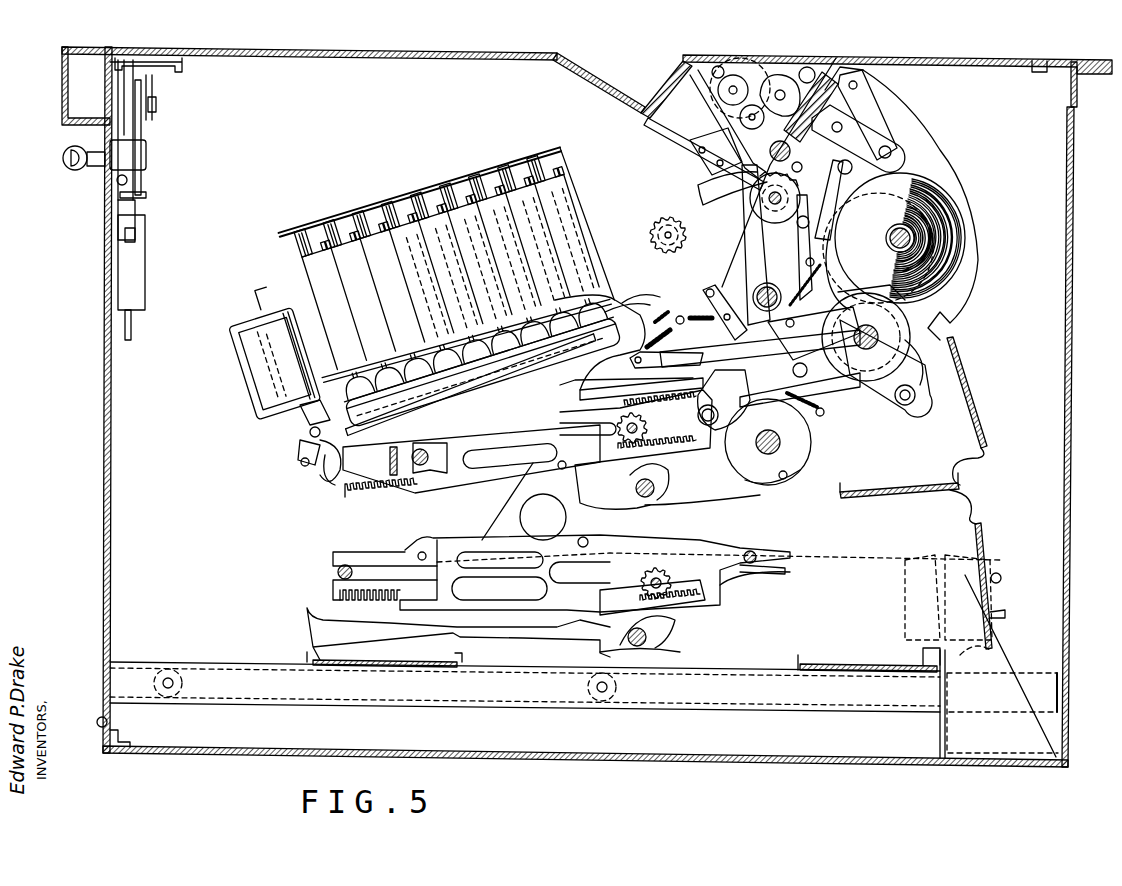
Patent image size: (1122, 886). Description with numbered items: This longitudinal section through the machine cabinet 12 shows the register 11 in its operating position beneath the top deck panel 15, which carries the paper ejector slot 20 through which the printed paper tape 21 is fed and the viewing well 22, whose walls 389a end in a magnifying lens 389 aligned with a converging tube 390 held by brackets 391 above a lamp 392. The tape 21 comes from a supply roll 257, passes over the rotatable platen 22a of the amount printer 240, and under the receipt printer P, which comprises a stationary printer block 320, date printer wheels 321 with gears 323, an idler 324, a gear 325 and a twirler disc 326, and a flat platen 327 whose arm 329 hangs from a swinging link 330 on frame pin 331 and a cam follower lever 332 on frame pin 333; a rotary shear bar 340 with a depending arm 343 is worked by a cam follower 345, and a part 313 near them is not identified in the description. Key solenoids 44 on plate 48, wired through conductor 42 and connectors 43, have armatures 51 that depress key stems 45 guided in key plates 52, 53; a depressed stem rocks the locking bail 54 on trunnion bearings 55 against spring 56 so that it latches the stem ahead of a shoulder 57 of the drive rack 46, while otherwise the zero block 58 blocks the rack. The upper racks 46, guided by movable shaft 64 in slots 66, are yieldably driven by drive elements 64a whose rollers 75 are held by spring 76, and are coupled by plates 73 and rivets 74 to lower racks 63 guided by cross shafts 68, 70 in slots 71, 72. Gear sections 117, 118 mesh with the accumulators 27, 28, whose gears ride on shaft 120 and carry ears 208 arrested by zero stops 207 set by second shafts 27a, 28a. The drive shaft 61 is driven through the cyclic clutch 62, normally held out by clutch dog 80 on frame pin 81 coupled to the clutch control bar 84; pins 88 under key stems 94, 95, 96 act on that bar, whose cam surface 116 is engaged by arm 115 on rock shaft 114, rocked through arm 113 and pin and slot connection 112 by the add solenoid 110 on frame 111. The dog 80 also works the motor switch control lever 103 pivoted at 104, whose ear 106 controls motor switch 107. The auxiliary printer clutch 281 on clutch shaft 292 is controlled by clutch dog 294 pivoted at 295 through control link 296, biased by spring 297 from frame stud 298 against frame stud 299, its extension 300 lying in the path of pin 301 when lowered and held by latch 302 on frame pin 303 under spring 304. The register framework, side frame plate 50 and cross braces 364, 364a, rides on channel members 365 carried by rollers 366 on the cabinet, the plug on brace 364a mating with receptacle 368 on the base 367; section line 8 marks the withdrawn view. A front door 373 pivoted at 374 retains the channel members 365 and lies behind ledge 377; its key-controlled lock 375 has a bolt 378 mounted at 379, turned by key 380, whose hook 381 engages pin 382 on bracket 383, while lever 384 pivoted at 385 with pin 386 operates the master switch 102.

The section line 8- 8 is at (888, 538).
The keyboard unit 11 is at (388, 180).
The section line 12- 12 is at (214, 37).
The housing top wall 15 is at (452, 50).
The platen 20 is at (815, 58).
The platen support 21 is at (837, 58).
The printing mechanism 22 is at (630, 49).
The ratchet wheel 22a is at (770, 220).
The rack plate 27 is at (636, 452).
The rack plate extension 27a is at (648, 505).
The lower rack plate 28 is at (600, 612).
The lower rack plate extension 28a is at (648, 655).
The bracket 42 is at (1010, 612).
The bracket post 43 is at (944, 540).
The key cover plate 44 is at (555, 196).
The key guide bar 45 is at (612, 307).
The slotted bar 46 is at (482, 490).
The key guide bar 48 is at (604, 292).
The base plate 50 is at (668, 268).
The key stem 51 is at (545, 172).
The link 52 is at (638, 320).
The spring 53 is at (622, 348).
The spring 54 is at (620, 330).
The link 55 is at (665, 313).
The key head 56 is at (476, 362).
The guide plate 57 is at (425, 386).
The guide plate 58 is at (392, 394).
The shaft 61 is at (800, 440).
The disc 62 is at (808, 450).
The slide plate 63 is at (716, 557).
The pivot screw 64 is at (422, 468).
The pivot block 64a is at (432, 480).
The rack 66 is at (346, 491).
The pivot screw 68 is at (338, 572).
The link 70 is at (748, 575).
The slide bar 71 is at (382, 558).
The pivot 72 is at (770, 560).
The link 73 is at (490, 512).
The pivot pin 74 is at (580, 538).
The slot 75 is at (463, 465).
The block 76 is at (388, 465).
The pivot 80 is at (716, 386).
The cam disc 81 is at (765, 430).
The lever 84 is at (325, 483).
The plate 88 is at (600, 380).
The key lever 94 is at (568, 350).
The key lever 95 is at (522, 335).
The key lever 96 is at (458, 360).
The bracket 102 is at (136, 258).
The pin 103 is at (824, 413).
The spring 104 is at (810, 380).
The plate 106 is at (805, 332).
The plate 107 is at (850, 290).
The frame 110 is at (255, 352).
The bracket 111 is at (300, 290).
The pin 112 is at (300, 458).
The latch 113 is at (300, 448).
The pin 114 is at (310, 432).
The lever 115 is at (300, 418).
The pawl 116 is at (305, 470).
The rack 117 is at (650, 398).
The rack 118 is at (700, 452).
The slot 120 is at (612, 430).
The pivot screw 207 is at (668, 478).
The pinion 208 is at (645, 420).
The gear 240 is at (657, 238).
The spring drum 257 is at (937, 197).
The cam wheel 281 is at (895, 312).
The frame plate 292 is at (905, 345).
The lever 294 is at (886, 395).
The pivot 295 is at (912, 398).
The bar 296 is at (690, 380).
The rack 297 is at (660, 360).
The spring 298 is at (668, 320).
The bar 299 is at (720, 338).
The lever 300 is at (755, 385).
The pin 301 is at (795, 470).
The pivot 302 is at (740, 290).
The lever 303 is at (722, 285).
The link 304 is at (702, 300).
The spring 313 is at (798, 262).
The cam 320 is at (802, 63).
The gear 321 is at (750, 60).
The gear 323 is at (752, 68).
The chute 324 is at (718, 118).
The gear 325 is at (716, 62).
The gear 326 is at (712, 56).
The ratchet 327 is at (852, 95).
The arm 329 is at (880, 142).
The arm 330 is at (865, 103).
The plate 331 is at (855, 88).
The plate 332 is at (905, 177).
The arm 333 is at (790, 256).
The pivot 340 is at (790, 152).
The pin 343 is at (802, 168).
The segment 345 is at (797, 190).
The rail 364 is at (418, 672).
The rail 364a is at (840, 673).
The base plate 365 is at (150, 662).
The screw 366 is at (186, 683).
The bracket 367 is at (920, 766).
The spring 368 is at (985, 645).
The side wall 373 is at (112, 548).
The screw 374 is at (100, 732).
The lock mechanism 375 is at (163, 140).
The housing lug 377 is at (60, 96).
The plate 378 is at (140, 177).
The lock body 379 is at (146, 160).
The key 380 is at (76, 170).
The plate 381 is at (152, 125).
The block 382 is at (157, 99).
The bracket 383 is at (150, 70).
The bracket 384 is at (118, 208).
The pin 385 is at (108, 180).
The plate 386 is at (150, 200).
The spring 389 is at (665, 83).
The sloped wall 389a is at (612, 95).
The plate 390 is at (663, 135).
The bracket 391 is at (685, 157).
The screw 392 is at (710, 172).
The paper path P is at (787, 50).